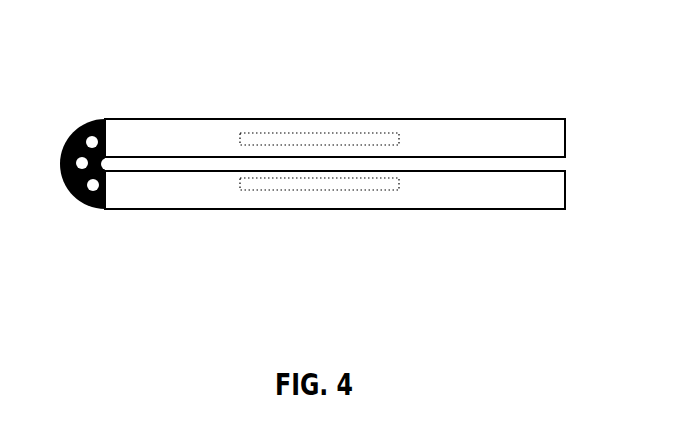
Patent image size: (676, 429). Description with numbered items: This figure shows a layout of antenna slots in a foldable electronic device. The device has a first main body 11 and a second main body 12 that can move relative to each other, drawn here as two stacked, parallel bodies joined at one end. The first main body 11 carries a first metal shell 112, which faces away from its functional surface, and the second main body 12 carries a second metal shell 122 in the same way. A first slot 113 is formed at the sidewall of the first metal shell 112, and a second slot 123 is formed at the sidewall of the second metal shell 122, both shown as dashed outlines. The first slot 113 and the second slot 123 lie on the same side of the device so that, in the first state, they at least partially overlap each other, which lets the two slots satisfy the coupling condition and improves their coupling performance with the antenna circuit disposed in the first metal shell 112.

The first main body 11 is at (314, 108).
The second main body 12 is at (304, 221).
The first metal shell 112 is at (166, 109).
The first slot 113 is at (379, 123).
The second metal shell 122 is at (174, 221).
The second slot 123 is at (385, 191).